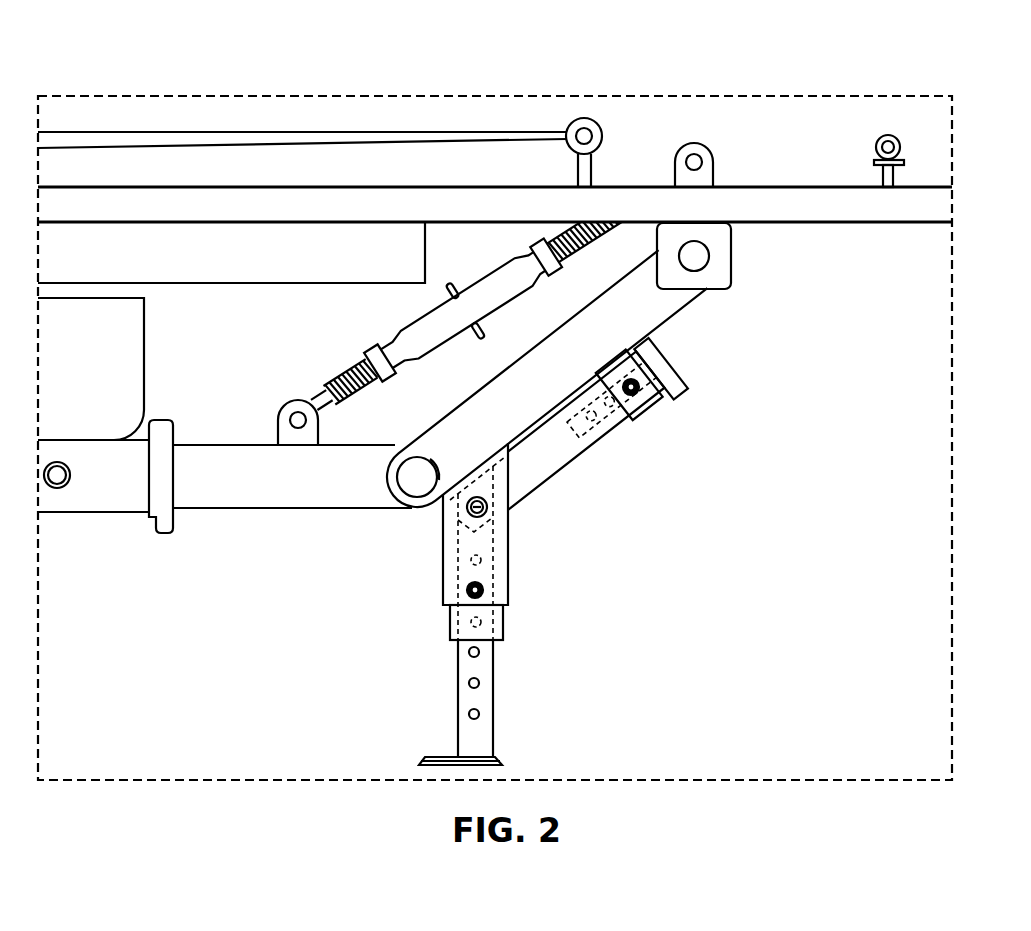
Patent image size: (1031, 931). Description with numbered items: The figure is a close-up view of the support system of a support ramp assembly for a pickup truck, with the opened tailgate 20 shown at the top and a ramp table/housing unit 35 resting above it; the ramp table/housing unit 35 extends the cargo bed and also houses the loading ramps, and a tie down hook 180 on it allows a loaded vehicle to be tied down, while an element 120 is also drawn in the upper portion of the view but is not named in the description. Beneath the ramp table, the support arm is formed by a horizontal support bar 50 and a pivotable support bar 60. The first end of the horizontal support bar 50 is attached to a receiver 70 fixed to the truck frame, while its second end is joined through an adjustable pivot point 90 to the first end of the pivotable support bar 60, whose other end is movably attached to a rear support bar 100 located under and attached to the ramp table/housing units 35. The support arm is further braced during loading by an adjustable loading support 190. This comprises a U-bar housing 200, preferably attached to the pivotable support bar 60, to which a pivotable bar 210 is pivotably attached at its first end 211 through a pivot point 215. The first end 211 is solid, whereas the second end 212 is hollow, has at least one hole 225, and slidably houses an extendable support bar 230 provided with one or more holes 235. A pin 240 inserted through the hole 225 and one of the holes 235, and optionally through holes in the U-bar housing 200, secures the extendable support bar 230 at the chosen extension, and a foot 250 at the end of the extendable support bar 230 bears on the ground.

The tailgate 20 is at (252, 283).
The ramp table/housing unit 35 is at (612, 197).
The horizontal support bar 50 is at (252, 497).
The pivotable support bar 60 is at (534, 360).
The receiver 70 is at (101, 497).
The adjustable pivot point 90 is at (421, 475).
The rear support bar 100 is at (720, 252).
The strap 120 is at (175, 142).
The tie down hook 180 is at (900, 147).
The adjustable loading support 190 is at (606, 592).
The U-bar housing 200 is at (442, 558).
The pivotable bar 210 is at (562, 448).
The first end of the pivotable bar 211 is at (490, 500).
The second end of the pivotable bar 212 is at (608, 428).
The pivot point 215 is at (467, 510).
The hole 225 is at (497, 622).
The extendable support bar 230 is at (485, 702).
The holes 235 is at (468, 652).
The pin 240 is at (483, 590).
The foot 250 is at (677, 381).